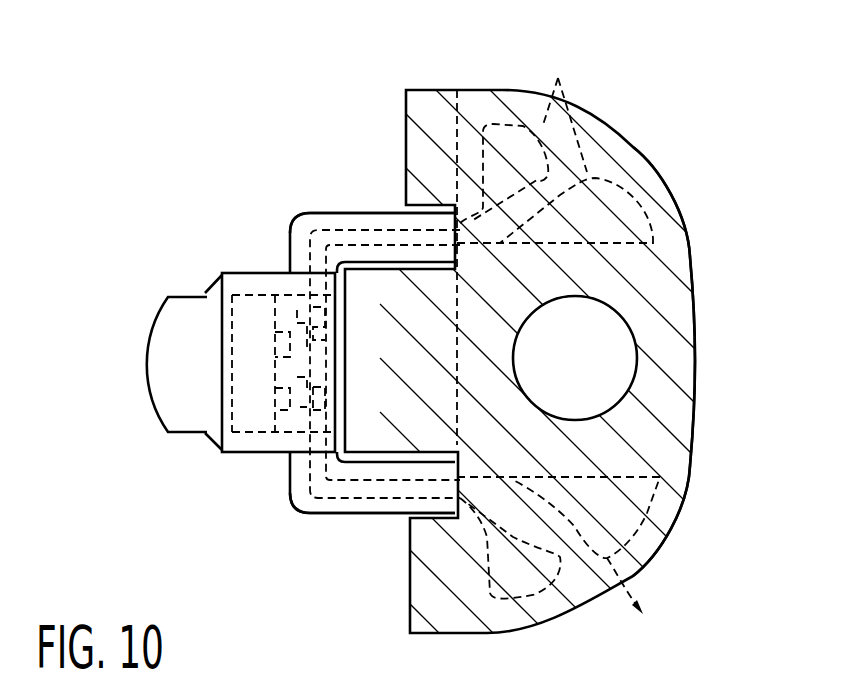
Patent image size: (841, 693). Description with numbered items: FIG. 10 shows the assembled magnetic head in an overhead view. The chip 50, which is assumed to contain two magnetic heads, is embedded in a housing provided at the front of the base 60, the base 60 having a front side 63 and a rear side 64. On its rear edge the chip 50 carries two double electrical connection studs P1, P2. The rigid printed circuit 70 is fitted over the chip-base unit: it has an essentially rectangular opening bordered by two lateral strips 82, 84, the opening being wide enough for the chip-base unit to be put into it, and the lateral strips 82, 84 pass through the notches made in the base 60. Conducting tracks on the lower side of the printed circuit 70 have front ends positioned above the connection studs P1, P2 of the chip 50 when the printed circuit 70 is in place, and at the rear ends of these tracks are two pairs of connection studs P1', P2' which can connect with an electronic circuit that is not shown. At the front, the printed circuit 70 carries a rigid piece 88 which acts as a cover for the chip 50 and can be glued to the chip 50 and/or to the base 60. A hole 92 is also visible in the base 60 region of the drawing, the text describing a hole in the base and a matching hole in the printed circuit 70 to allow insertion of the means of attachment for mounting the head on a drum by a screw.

The chip 50 is at (146, 345).
The base 60 is at (652, 150).
The front side 63 is at (209, 285).
The rear side 64 is at (695, 300).
The rigid printed circuit 70 is at (372, 209).
The lateral strip 82 is at (352, 514).
The lateral strip 84 is at (317, 212).
The rigid piece 88 is at (222, 390).
The bore 92 is at (623, 363).
The connection stud P1 is at (263, 452).
The connection stud P2 is at (261, 279).
The connection stud P1' is at (575, 565).
The connection stud P2' is at (555, 241).